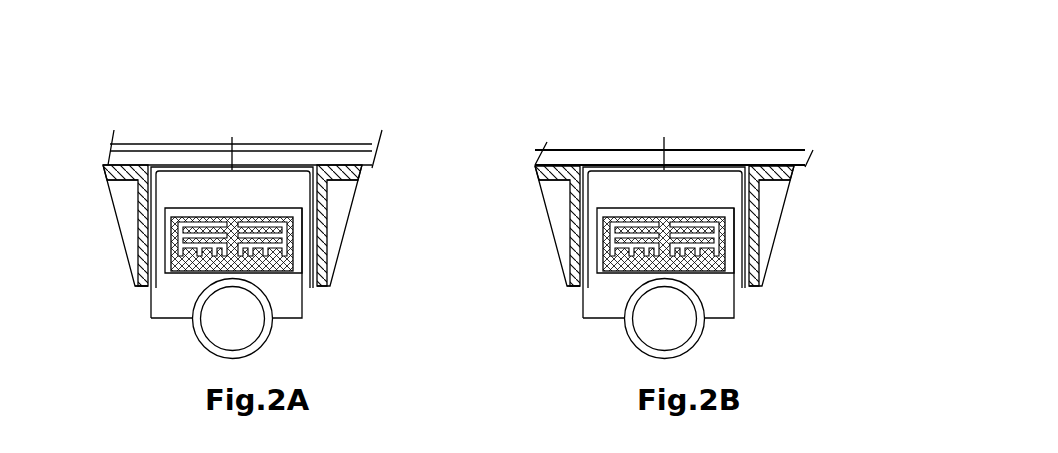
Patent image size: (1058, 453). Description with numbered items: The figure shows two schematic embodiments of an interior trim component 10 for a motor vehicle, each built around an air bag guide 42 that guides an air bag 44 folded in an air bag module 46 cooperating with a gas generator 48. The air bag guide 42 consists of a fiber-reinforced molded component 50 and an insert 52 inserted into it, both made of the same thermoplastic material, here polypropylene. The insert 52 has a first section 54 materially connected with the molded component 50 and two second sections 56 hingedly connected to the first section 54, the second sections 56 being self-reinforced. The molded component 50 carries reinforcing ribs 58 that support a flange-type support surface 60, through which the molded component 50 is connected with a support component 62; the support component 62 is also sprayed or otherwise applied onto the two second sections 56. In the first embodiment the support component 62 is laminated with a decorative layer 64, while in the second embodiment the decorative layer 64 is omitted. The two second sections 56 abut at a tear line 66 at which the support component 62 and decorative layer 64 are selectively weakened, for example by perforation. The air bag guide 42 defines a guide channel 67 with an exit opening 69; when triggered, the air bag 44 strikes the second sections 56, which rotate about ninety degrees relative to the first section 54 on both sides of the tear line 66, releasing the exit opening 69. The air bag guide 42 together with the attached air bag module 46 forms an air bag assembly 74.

In FIG. 2A, the interior trim component 10 is at (431, 72).
In FIG. 2B, the interior trim component 10 is at (889, 43).
In FIG. 2A, the air bag guide 42 is at (377, 232).
In FIG. 2B, the air bag guide 42 is at (835, 246).
In FIG. 2A, the air bag 44 is at (293, 262).
In FIG. 2B, the air bag 44 is at (702, 252).
In FIG. 2A, the air bag module 46 is at (145, 327).
In FIG. 2B, the air bag module 46 is at (636, 282).
In FIG. 2A, the gas generator 48 is at (258, 328).
In FIG. 2B, the gas generator 48 is at (703, 323).
In FIG. 2A, the molded component 50 is at (145, 257).
In FIG. 2B, the molded component 50 is at (546, 226).
In FIG. 2A, the insert 52 is at (205, 165).
In FIG. 2B, the insert 52 is at (670, 126).
In FIG. 2A, the first section 54 is at (148, 288).
In FIG. 2B, the first section 54 is at (523, 306).
In FIG. 2A, the second sections 56 is at (276, 165).
In FIG. 2B, the second sections 56 is at (674, 109).
In FIG. 2A, the reinforcing ribs 58 is at (115, 233).
In FIG. 2B, the reinforcing ribs 58 is at (525, 226).
In FIG. 2A, the flange-type support surface 60 is at (108, 178).
In FIG. 2B, the flange-type support surface 60 is at (540, 207).
In FIG. 2A, the support component 62 is at (144, 157).
In FIG. 2B, the support component 62 is at (670, 121).
In FIG. 2A, the decorative layer 64 is at (173, 147).
In FIG. 2A, the tear line 66 is at (233, 171).
In FIG. 2B, the tear line 66 is at (755, 226).
In FIG. 2A, the guide channel 67 is at (208, 202).
In FIG. 2B, the guide channel 67 is at (624, 189).
In FIG. 2A, the exit opening 69 is at (297, 170).
In FIG. 2B, the exit opening 69 is at (780, 188).
In FIG. 2A, the air bag assembly 74 is at (333, 318).
In FIG. 2B, the air bag assembly 74 is at (795, 335).